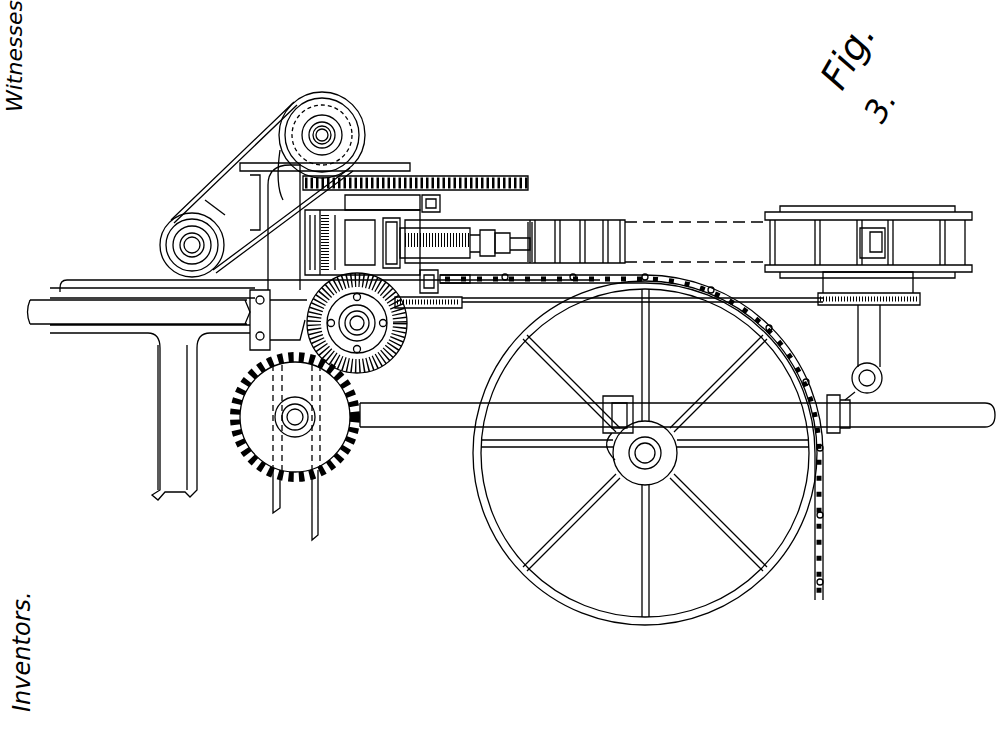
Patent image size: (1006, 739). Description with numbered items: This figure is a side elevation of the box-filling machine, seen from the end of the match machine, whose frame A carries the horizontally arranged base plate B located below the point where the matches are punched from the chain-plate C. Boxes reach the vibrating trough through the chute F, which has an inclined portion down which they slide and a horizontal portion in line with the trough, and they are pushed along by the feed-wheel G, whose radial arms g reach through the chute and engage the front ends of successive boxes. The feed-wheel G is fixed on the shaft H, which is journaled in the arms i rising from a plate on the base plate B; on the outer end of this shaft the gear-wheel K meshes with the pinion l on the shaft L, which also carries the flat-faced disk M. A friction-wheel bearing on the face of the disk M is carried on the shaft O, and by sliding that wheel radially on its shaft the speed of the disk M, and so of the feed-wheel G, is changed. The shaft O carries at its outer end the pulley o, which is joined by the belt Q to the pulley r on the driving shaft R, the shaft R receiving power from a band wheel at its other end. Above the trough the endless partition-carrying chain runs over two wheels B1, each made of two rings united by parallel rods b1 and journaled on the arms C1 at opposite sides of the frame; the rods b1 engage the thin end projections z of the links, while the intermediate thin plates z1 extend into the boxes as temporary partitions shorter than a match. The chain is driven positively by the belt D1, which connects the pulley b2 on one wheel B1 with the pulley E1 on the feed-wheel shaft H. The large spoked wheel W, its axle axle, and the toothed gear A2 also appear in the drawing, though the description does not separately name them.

The frame A is at (158, 370).
The spur gear on frame A2 is at (295, 448).
The base plate B is at (235, 185).
The chain wheel B1 is at (848, 212).
The parallel rods b1 is at (815, 232).
The pulley b2 is at (905, 305).
The chain-plate C is at (500, 285).
The arms C1 is at (880, 340).
The belt D1 is at (790, 302).
The pulley E1 is at (460, 308).
The chute F is at (362, 242).
The feed-wheel G is at (448, 228).
The radial arms g is at (476, 230).
The shaft H is at (430, 305).
The arms i is at (428, 298).
The gear-wheel K is at (484, 176).
The shaft L is at (268, 200).
The pinion l is at (300, 190).
The disk M is at (395, 195).
The shaft O is at (322, 128).
The pulley o is at (316, 128).
The belt Q is at (255, 195).
The shaft R is at (190, 246).
The pulley r is at (180, 230).
The end projection z is at (558, 244).
The intermediate projections z1 is at (532, 232).
The element axle is at (677, 415).
The wheel W is at (645, 453).